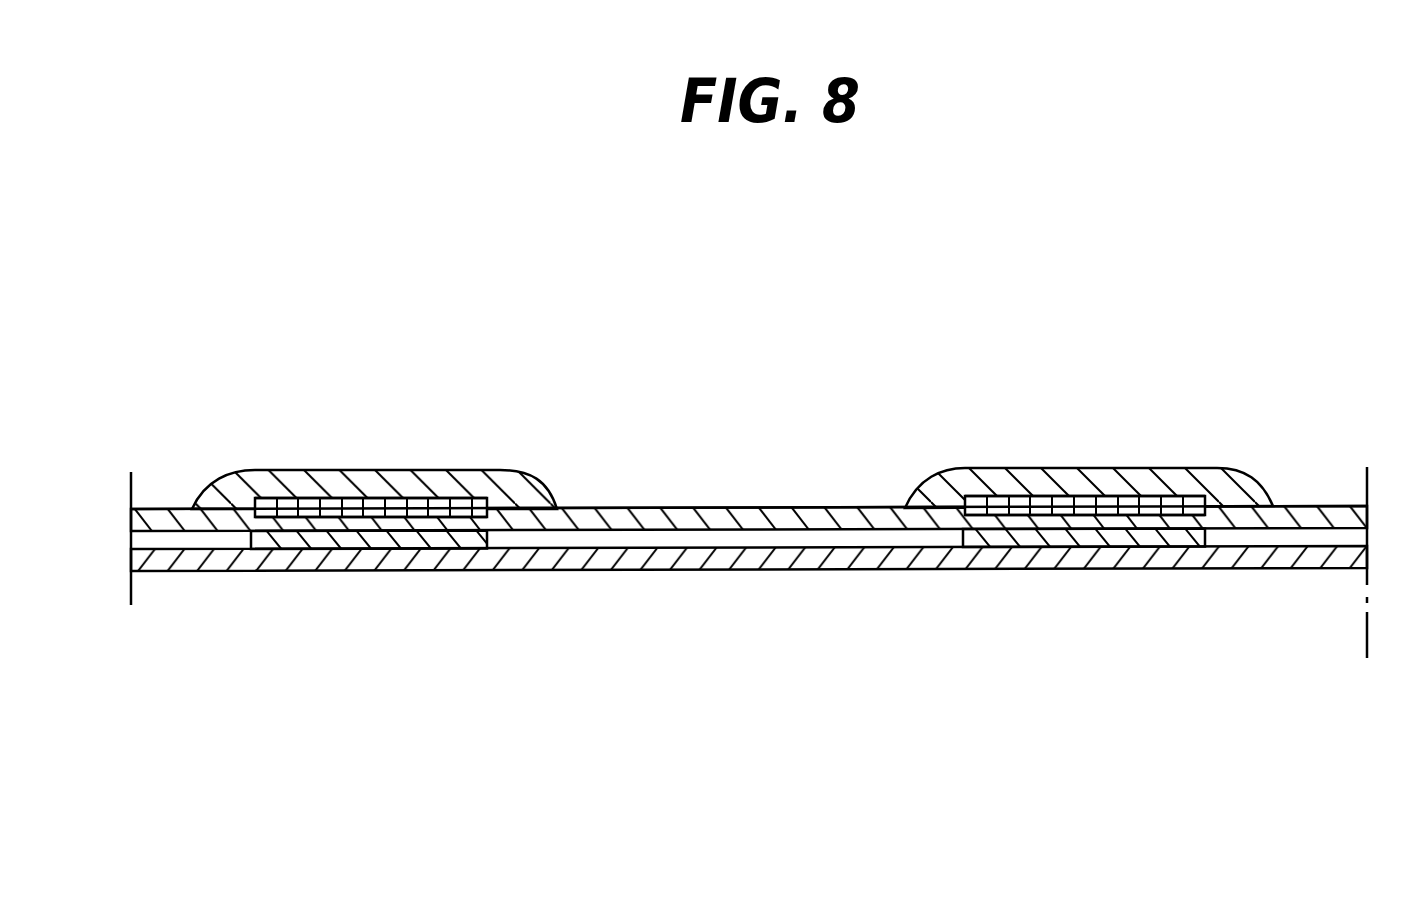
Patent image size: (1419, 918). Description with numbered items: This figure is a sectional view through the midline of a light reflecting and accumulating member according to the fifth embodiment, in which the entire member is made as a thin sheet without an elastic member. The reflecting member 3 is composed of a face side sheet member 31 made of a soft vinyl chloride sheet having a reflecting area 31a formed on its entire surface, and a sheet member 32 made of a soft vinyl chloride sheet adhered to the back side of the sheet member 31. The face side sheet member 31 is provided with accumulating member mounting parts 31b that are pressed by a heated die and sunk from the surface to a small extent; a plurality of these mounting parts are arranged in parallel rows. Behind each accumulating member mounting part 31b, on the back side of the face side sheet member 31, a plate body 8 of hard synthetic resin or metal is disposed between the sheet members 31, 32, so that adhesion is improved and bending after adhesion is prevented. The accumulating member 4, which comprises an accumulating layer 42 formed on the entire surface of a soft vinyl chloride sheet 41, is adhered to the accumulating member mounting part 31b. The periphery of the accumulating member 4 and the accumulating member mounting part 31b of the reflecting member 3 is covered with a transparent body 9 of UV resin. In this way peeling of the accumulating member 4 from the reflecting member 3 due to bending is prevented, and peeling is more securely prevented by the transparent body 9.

The reflecting member 3 is at (749, 489).
The sheet member 31 is at (860, 338).
The sheet member 32 is at (785, 557).
The reflecting area 31a is at (163, 508).
The accumulating member mounting part 31b is at (210, 509).
The accumulating member 4 is at (741, 349).
The soft vinyl chloride sheet 41 is at (425, 513).
The accumulating layer 42 is at (453, 500).
The plate body 8 is at (395, 542).
The transparent body 9 is at (345, 470).